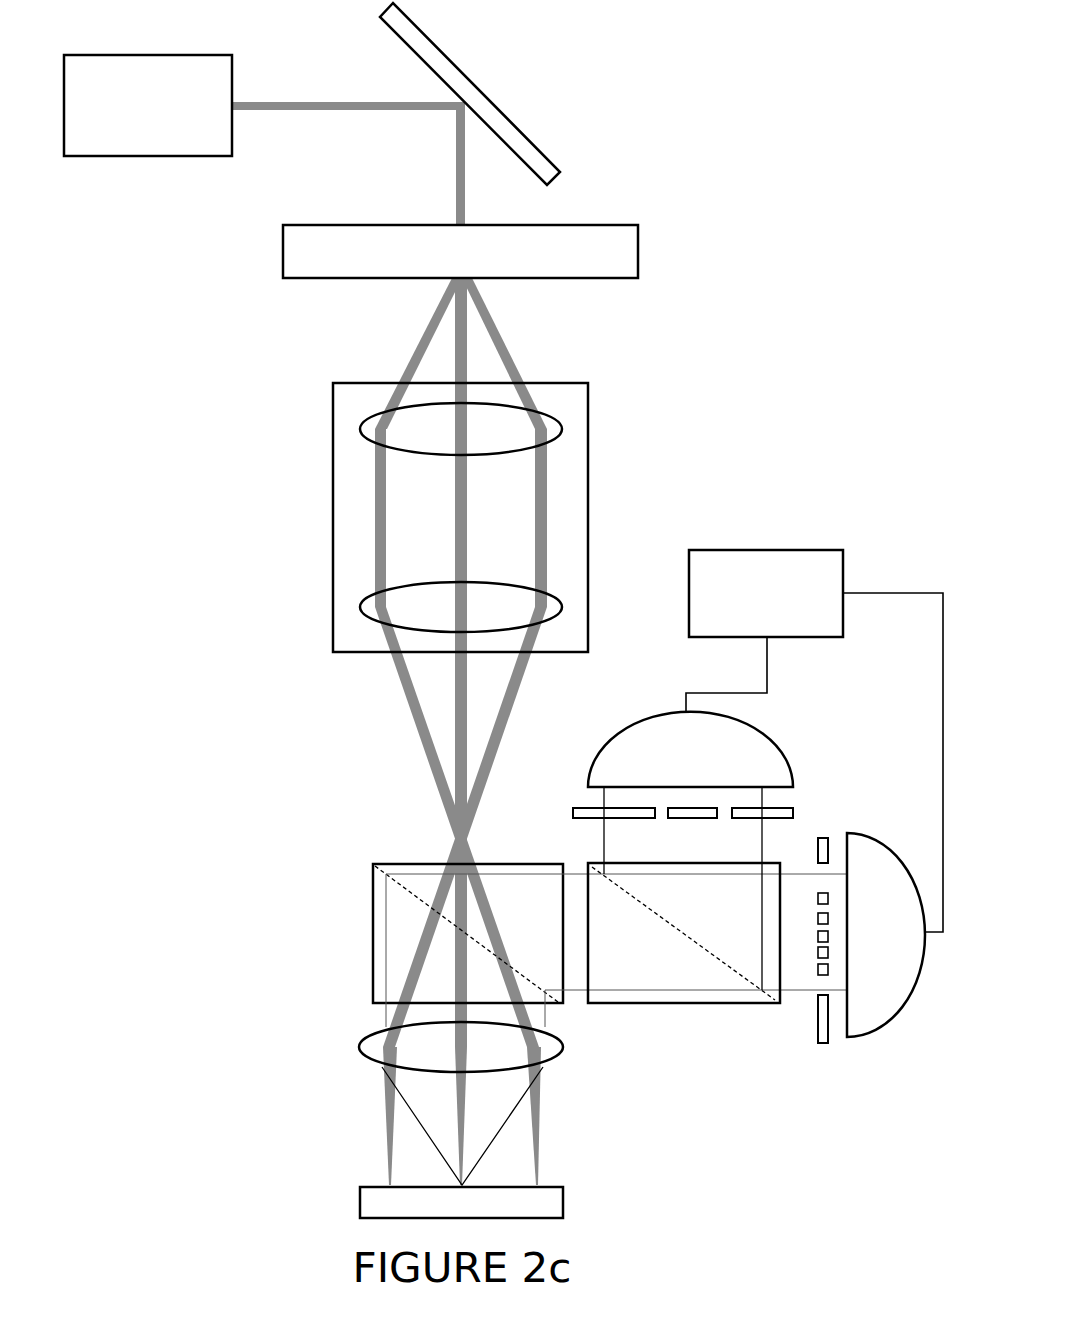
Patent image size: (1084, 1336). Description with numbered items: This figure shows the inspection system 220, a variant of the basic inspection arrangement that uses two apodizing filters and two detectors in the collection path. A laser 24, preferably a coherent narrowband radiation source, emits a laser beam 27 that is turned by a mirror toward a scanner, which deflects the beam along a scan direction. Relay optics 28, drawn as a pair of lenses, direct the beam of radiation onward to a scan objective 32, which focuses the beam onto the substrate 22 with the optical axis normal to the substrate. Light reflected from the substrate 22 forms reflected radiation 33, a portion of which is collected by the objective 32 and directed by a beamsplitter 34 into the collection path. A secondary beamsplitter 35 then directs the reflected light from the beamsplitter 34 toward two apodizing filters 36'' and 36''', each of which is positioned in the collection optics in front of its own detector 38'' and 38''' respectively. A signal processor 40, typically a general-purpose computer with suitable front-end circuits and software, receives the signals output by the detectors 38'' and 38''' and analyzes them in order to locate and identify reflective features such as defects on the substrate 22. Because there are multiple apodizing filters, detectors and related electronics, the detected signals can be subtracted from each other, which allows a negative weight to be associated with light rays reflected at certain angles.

The substrate 22 is at (461, 1202).
The laser 24 is at (148, 105).
The laser beam 27 is at (454, 170).
The relay optics 28 is at (283, 413).
The scan objective 32 is at (353, 1046).
The reflected radiation 33 is at (507, 1118).
The beamsplitter 34 is at (373, 934).
The secondary beamsplitter 35 is at (685, 1005).
The apodizing filter 36'' is at (658, 801).
The apodizing filter 36''' is at (856, 915).
The detector 38'' is at (690, 851).
The detector 38''' is at (886, 935).
The signal processor 40 is at (814, 741).
The inspection system 220 is at (182, 1193).